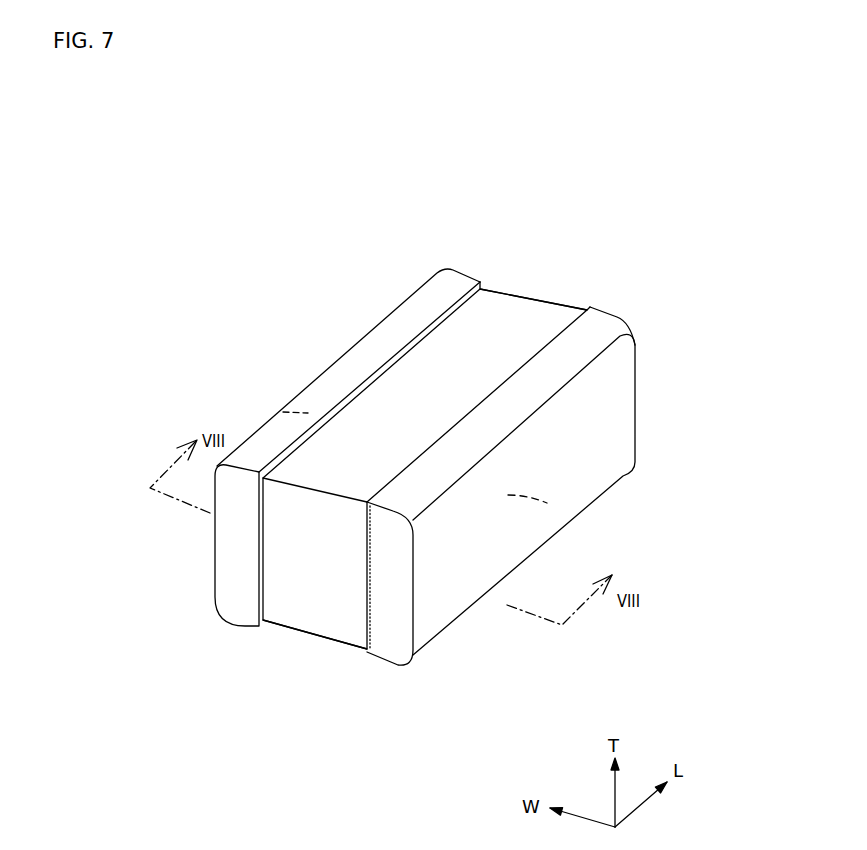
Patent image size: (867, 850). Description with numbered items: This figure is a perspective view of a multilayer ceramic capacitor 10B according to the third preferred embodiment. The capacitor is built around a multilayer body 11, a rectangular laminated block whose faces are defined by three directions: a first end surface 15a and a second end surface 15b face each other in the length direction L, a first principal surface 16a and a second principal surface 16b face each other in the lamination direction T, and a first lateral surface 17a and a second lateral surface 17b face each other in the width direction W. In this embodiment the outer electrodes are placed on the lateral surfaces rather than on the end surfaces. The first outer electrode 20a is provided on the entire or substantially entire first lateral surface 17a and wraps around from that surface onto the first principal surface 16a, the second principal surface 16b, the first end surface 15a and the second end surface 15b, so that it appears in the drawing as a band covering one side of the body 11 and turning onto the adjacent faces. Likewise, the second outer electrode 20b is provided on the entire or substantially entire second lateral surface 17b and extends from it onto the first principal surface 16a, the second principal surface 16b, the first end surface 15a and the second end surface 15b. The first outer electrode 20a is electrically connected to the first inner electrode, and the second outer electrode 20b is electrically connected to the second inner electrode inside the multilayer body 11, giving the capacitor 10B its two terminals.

The multilayer ceramic capacitor 10B is at (440, 217).
The multilayer body 11 is at (500, 290).
The first end surface 15a is at (297, 588).
The second end surface 15b is at (553, 321).
The first principal surface 16a is at (428, 375).
The second principal surface 16b is at (350, 630).
The first lateral surface 17a is at (282, 413).
The second lateral surface 17b is at (547, 503).
The first outer electrode 20a is at (348, 355).
The second outer electrode 20b is at (570, 452).